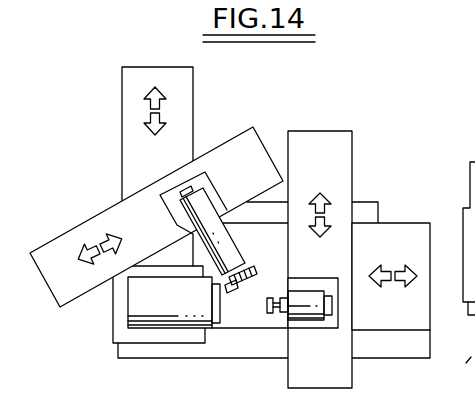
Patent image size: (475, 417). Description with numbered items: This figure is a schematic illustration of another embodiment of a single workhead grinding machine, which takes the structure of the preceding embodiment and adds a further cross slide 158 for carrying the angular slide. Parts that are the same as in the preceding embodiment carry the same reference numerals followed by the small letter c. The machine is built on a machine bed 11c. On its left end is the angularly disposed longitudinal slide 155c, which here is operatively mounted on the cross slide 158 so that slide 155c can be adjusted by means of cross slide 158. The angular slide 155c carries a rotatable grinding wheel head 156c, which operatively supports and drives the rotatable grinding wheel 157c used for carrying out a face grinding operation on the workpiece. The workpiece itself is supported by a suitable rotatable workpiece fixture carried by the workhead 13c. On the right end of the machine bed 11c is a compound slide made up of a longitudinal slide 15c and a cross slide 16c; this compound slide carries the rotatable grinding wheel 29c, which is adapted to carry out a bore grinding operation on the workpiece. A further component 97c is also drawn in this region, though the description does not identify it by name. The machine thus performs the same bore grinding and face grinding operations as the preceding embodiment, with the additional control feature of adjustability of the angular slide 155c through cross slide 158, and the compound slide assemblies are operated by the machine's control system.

The cross slide 158 is at (138, 116).
The angularly disposed longitudinal slide 155c is at (270, 100).
The rotatable grinding wheel head 156c is at (200, 202).
The rotatable grinding wheel 157c is at (244, 290).
The cross slide 16c is at (330, 144).
The machine bed 11c is at (375, 193).
The longitudinal slide 15c is at (404, 232).
The rotatable grinding wheel 29c is at (268, 297).
The drive motor 97c is at (308, 300).
The workhead 13c is at (169, 349).